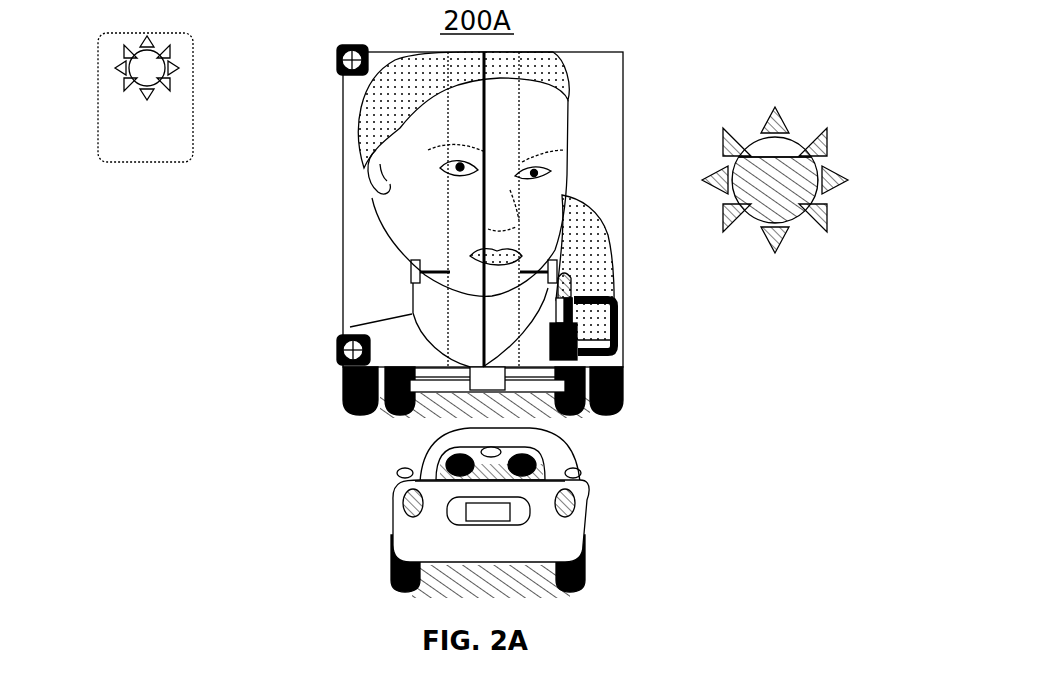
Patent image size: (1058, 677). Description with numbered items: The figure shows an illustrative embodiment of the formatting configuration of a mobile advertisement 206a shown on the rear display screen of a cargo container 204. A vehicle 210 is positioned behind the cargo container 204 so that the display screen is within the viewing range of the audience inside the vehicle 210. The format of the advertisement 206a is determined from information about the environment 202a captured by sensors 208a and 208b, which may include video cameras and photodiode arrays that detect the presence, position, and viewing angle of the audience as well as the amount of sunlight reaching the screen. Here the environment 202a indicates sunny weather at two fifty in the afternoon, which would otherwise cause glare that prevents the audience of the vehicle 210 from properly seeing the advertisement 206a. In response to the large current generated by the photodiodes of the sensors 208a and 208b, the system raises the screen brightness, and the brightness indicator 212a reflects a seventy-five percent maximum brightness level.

The environment 202a is at (98, 126).
The cargo container 204 is at (343, 116).
The advertisement 206a is at (343, 195).
The sensor 208a is at (337, 56).
The sensor 208b is at (337, 346).
The vehicle 210 is at (420, 456).
The brightness indicator 212a is at (826, 110).